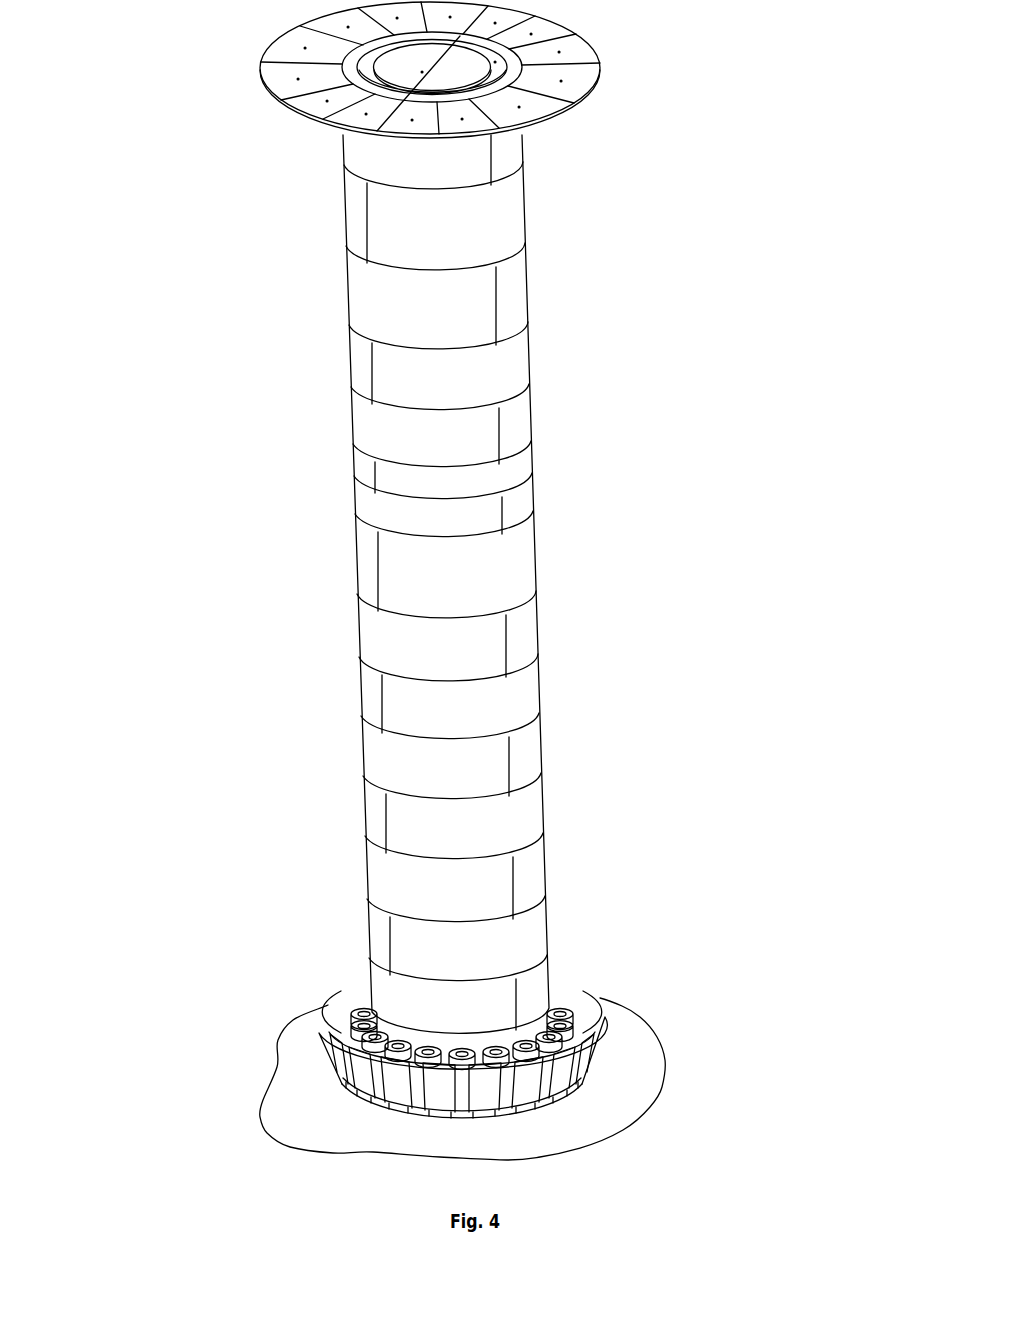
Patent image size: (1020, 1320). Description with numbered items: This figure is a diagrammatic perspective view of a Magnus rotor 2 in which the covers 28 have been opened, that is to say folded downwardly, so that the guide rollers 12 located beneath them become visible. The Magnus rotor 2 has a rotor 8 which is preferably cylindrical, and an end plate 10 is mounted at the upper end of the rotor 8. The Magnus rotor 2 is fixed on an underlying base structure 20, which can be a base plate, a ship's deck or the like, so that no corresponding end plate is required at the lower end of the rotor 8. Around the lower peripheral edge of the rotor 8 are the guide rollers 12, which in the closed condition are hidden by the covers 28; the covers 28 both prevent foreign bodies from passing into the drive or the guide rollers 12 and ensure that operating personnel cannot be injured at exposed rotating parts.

The Magnus rotor 2 is at (305, 535).
The rotor 8 is at (506, 357).
The end plate 10 is at (553, 95).
The guide rollers 12 is at (590, 1014).
The base structure 20 is at (331, 1115).
The covers 28 is at (598, 1030).